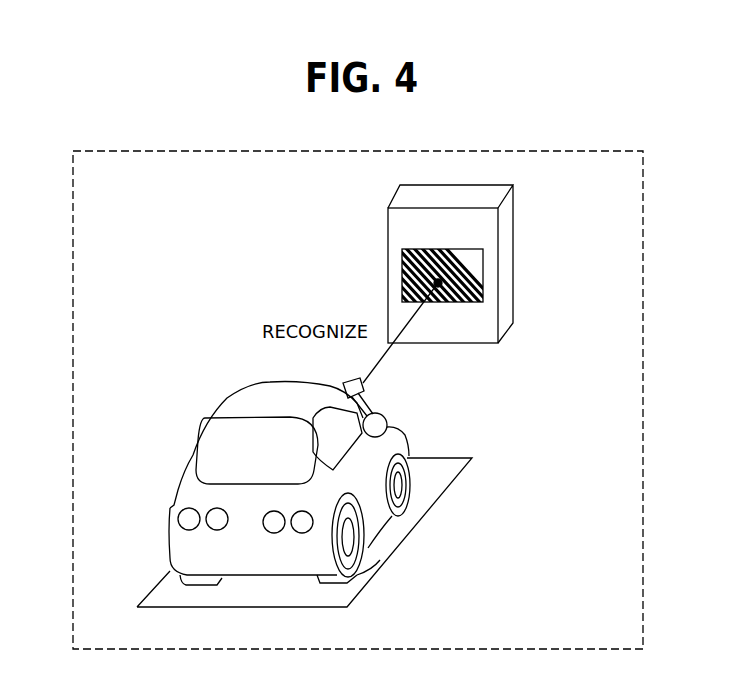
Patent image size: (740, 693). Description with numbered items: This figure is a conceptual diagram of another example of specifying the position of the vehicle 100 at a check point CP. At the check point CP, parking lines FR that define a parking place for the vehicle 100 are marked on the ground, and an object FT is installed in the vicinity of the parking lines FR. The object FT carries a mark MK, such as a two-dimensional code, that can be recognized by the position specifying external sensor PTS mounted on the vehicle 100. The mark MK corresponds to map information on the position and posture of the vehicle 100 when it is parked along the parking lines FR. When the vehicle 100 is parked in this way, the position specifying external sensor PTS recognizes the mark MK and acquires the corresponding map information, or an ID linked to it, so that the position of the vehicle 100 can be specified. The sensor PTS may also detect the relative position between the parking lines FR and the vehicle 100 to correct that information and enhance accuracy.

The check point CP is at (93, 151).
The object FT is at (513, 208).
The mark MK is at (473, 238).
The position specifying external sensor PTS is at (342, 379).
The parking lines FR is at (462, 455).
The vehicle 100 is at (167, 512).